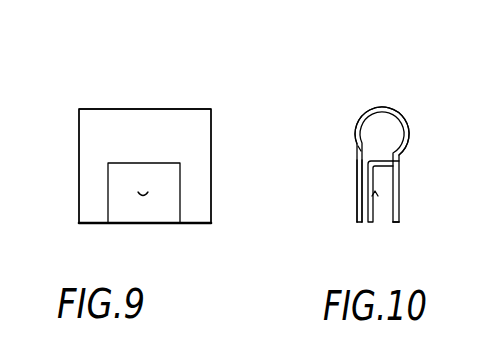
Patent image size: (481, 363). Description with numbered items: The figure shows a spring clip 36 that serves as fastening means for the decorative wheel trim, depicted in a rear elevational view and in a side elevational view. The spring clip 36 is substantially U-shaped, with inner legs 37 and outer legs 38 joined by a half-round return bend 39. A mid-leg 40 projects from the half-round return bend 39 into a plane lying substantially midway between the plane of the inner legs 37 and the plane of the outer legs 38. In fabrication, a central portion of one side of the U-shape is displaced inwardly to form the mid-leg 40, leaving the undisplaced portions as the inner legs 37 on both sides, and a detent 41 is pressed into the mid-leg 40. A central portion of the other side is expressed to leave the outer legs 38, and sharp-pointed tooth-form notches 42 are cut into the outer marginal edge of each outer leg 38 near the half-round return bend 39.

In FIG. 9, the spring clip 36 is at (137, 89).
In FIG. 10, the spring clip 36 is at (386, 88).
In FIG. 9, the inner legs 37 is at (84, 191).
In FIG. 10, the inner legs 37 is at (401, 190).
In FIG. 10, the outer legs 38 is at (357, 202).
In FIG. 9, the half-round return bend 39 is at (212, 135).
In FIG. 10, the half-round return bend 39 is at (407, 120).
In FIG. 9, the mid-leg 40 is at (155, 224).
In FIG. 10, the mid-leg 40 is at (370, 223).
In FIG. 9, the detent 41 is at (143, 190).
In FIG. 10, the detent 41 is at (376, 194).
In FIG. 10, the tooth-form notches 42 is at (356, 147).